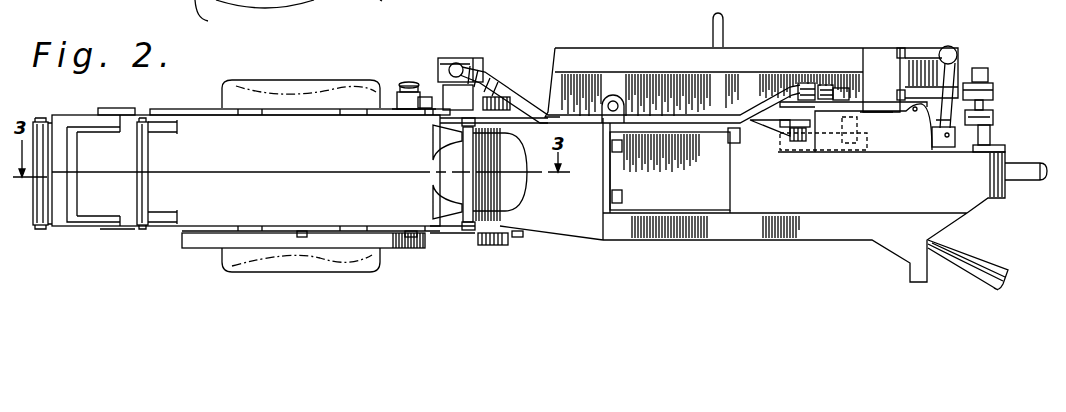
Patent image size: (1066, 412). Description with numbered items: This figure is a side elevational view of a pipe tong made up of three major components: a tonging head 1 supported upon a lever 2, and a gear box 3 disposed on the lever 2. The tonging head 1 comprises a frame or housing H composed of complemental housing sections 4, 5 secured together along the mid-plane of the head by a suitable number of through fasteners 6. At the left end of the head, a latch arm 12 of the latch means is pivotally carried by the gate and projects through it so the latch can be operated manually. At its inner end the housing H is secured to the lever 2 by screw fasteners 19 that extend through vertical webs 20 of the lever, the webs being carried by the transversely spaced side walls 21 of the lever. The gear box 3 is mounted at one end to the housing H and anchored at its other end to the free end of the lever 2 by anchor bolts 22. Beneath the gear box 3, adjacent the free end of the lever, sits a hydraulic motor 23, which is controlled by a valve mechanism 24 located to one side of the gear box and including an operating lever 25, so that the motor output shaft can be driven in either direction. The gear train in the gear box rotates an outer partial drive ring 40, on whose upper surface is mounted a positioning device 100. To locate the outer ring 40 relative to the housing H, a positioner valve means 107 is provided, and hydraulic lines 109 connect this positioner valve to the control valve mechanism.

The tonging head 1 is at (322, 107).
The lever 2 is at (772, 242).
The gear box 3 is at (800, 47).
The housing section 4 is at (270, 144).
The housing section 5 is at (270, 200).
The through fasteners 6 is at (300, 0).
The latch arm 12 is at (43, 215).
The screw fasteners 19 is at (622, 196).
The vertical webs 20 is at (607, 181).
The side walls 21 is at (857, 207).
The anchor bolts 22 is at (978, 68).
The hydraulic motor 23 is at (801, 141).
The valve mechanism 24 is at (901, 130).
The operating lever 25 is at (945, 47).
The outer partial drive ring 40 is at (395, 9).
The positioning device 100 is at (393, 90).
The positioner valve means 107 is at (492, 63).
The hydraulic lines 109 is at (782, 120).
The frame or housing H is at (200, 212).